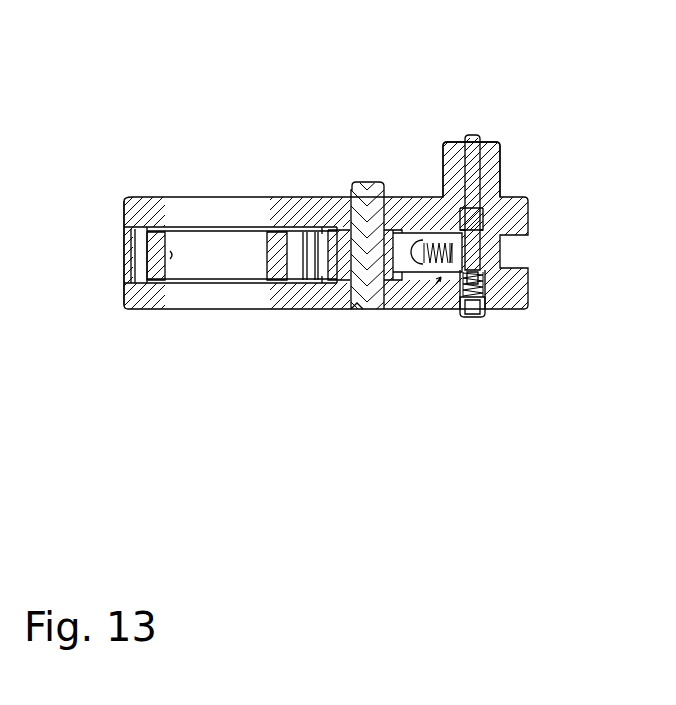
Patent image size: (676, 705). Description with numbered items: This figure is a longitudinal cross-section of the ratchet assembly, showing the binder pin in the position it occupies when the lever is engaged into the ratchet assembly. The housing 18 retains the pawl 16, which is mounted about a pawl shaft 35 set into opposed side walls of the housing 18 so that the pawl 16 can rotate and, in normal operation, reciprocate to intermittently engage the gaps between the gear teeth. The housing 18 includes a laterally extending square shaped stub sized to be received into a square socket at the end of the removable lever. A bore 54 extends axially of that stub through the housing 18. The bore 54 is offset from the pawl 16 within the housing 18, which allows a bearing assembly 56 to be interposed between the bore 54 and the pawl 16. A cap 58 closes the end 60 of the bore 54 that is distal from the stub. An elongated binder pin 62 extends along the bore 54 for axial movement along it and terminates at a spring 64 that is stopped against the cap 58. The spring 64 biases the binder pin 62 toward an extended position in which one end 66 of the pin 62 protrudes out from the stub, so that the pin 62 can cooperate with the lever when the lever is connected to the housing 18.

The pawl 16 is at (338, 262).
The housing 18 is at (143, 205).
The pawl shaft 35 is at (360, 182).
The bore 54 is at (480, 187).
The bearing assembly 56 is at (436, 284).
The cap 58 is at (468, 318).
The end of bore 60 is at (462, 317).
The binder pin 62 is at (450, 145).
The spring 64 is at (482, 297).
The end of pin 66 is at (472, 133).